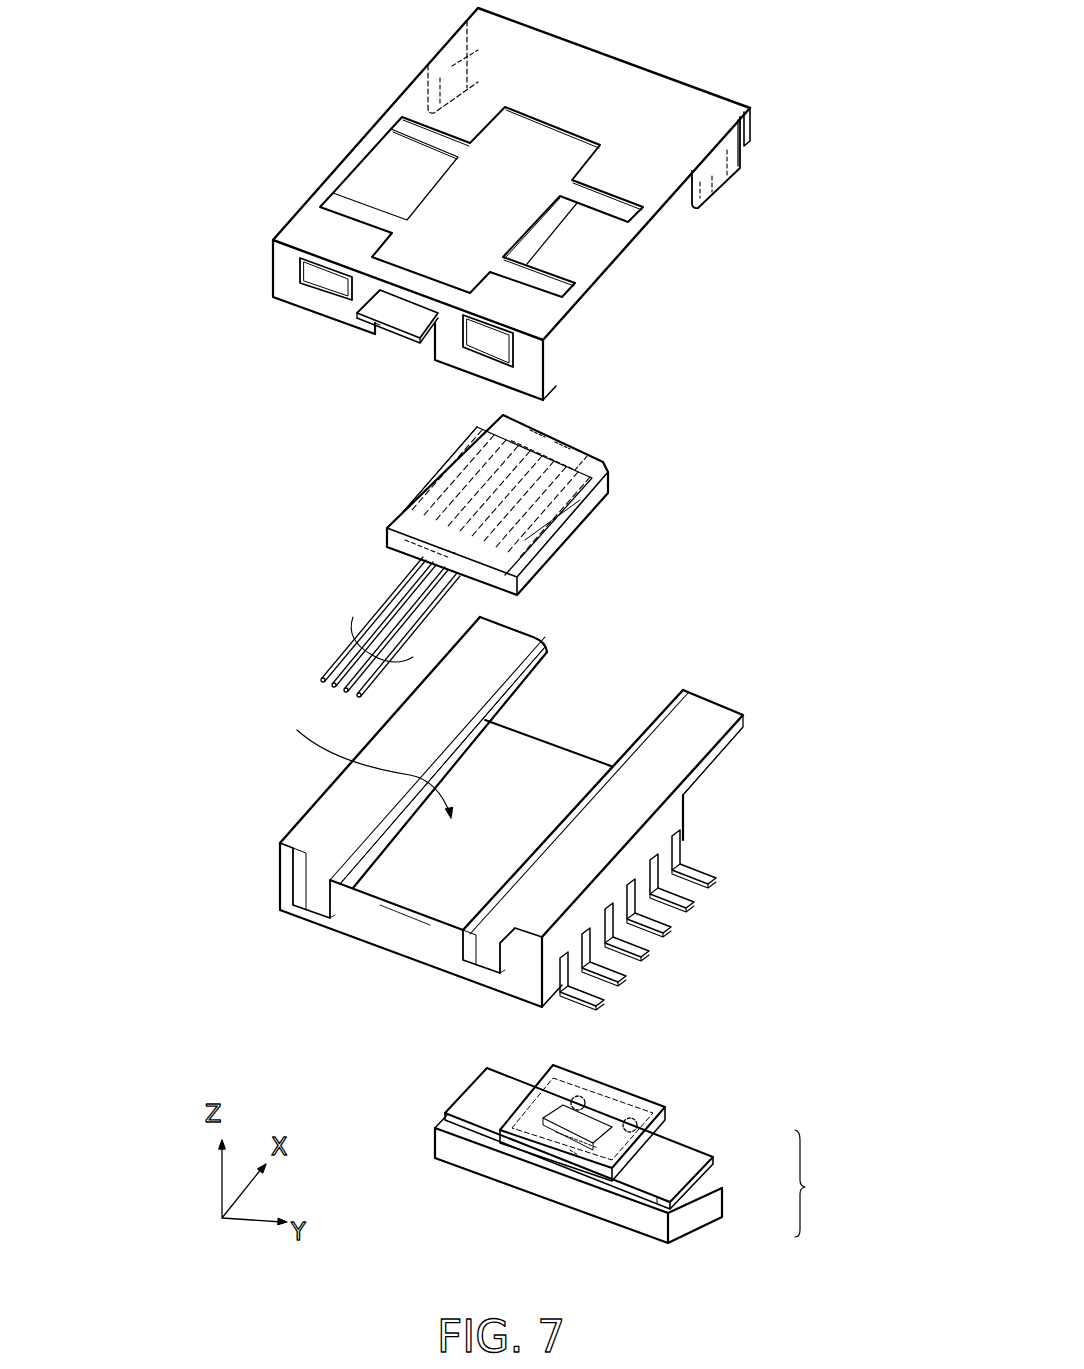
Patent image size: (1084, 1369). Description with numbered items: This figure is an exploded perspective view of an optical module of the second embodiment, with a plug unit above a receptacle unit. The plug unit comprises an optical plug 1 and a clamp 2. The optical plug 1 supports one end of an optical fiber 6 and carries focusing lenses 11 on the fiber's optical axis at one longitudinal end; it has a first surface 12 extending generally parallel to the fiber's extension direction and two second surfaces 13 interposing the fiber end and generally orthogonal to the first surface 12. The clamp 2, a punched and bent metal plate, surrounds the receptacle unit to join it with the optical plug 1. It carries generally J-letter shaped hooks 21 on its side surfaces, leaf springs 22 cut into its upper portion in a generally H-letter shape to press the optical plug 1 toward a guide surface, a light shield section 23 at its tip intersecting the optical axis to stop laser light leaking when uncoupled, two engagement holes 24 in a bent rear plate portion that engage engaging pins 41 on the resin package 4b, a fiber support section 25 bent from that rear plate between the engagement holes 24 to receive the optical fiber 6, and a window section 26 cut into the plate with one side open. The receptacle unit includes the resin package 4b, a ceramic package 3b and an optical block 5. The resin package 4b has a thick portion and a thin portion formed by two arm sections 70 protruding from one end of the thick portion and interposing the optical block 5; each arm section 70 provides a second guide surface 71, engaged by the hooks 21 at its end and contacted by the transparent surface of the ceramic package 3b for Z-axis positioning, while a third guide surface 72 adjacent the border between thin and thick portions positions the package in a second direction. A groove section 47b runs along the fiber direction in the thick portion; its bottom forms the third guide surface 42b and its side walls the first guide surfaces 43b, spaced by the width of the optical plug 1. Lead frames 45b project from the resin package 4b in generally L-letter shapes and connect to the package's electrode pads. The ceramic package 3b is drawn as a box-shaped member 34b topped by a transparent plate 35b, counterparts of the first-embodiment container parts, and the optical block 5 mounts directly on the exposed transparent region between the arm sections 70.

The optical plug 1 is at (447, 497).
The clamp 2 is at (688, 100).
The ceramic package 3b is at (637, 1145).
The resin package 4b is at (318, 825).
The optical block 5 is at (610, 1093).
The optical fiber 6 is at (352, 625).
The focusing lens 11 is at (585, 445).
The first surface 12 is at (403, 560).
The second surfaces 13 is at (393, 533).
The hooks 21 is at (430, 68).
The leaf springs 22 is at (383, 172).
The light shield section 23 is at (749, 140).
The engagement holes 24 is at (326, 283).
The fiber support section 25 is at (384, 318).
The window section 26 is at (409, 332).
The lower block 34b is at (688, 1210).
The upper block 35b is at (677, 1143).
The engaging pins 41 is at (303, 885).
The third guide surface 42b is at (430, 885).
The first guide surfaces 43b is at (372, 882).
The lead frames 45b is at (668, 923).
The groove section 47b is at (353, 760).
The arm sections 70 is at (515, 650).
The second guide surface 71 is at (527, 688).
The third guide surface 72 is at (688, 812).